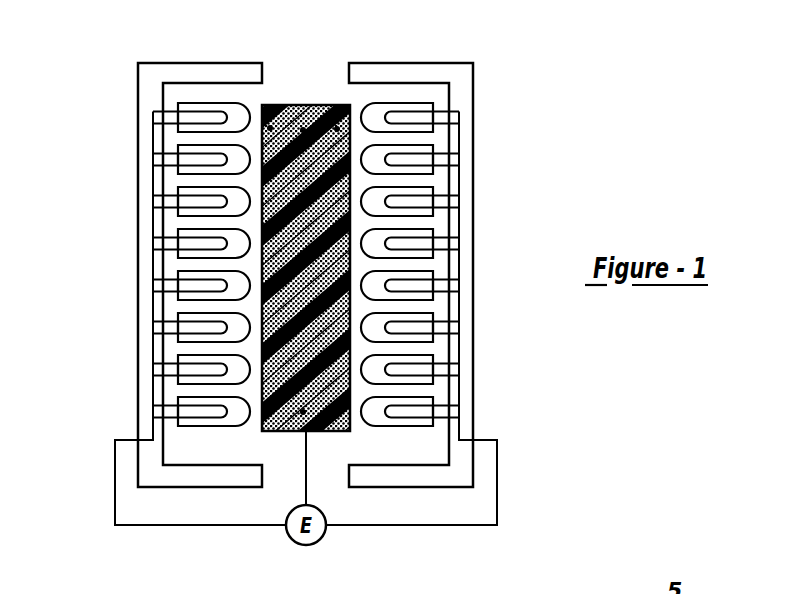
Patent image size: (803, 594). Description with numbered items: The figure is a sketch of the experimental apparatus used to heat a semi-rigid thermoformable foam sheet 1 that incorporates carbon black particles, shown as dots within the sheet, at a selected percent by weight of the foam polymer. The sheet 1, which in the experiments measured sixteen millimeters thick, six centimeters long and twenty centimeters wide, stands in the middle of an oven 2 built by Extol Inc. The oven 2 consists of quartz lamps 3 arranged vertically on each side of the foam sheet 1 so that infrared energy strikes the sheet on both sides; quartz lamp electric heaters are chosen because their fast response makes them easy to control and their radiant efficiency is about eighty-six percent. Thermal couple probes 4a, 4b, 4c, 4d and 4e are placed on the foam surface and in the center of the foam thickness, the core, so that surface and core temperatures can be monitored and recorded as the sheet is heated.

The semi-rigid thermoformable foam sheet 1 is at (330, 105).
The oven 2 is at (480, 212).
The quartz lamps 3 is at (197, 247).
The thermal couple probe 4a is at (337, 128).
The thermal couple probe 4b is at (335, 410).
The thermal couple probe 4c is at (270, 410).
The thermal couple probe 4d is at (270, 128).
The thermal couple probe 4e is at (303, 412).